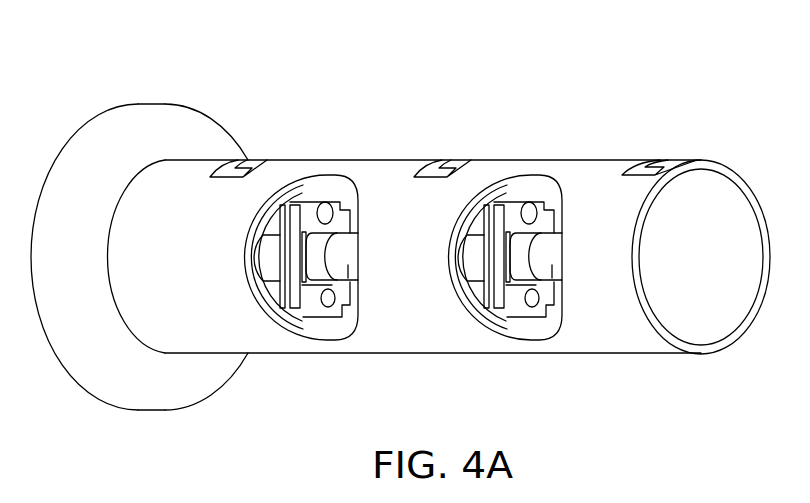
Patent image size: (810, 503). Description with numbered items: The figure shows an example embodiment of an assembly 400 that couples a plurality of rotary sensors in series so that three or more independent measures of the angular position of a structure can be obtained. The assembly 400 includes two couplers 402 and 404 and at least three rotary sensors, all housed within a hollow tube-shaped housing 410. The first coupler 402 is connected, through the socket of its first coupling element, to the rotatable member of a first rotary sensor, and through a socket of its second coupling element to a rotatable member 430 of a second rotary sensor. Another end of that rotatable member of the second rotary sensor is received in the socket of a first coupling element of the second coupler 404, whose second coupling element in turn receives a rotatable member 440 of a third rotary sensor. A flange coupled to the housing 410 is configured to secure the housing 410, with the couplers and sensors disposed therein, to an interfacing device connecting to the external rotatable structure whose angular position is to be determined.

The assembly 400 is at (507, 58).
The housing 410 is at (585, 160).
The coupler 402 is at (320, 194).
The coupler 404 is at (524, 194).
The rotatable member 430 is at (357, 298).
The rotatable member 440 is at (562, 300).